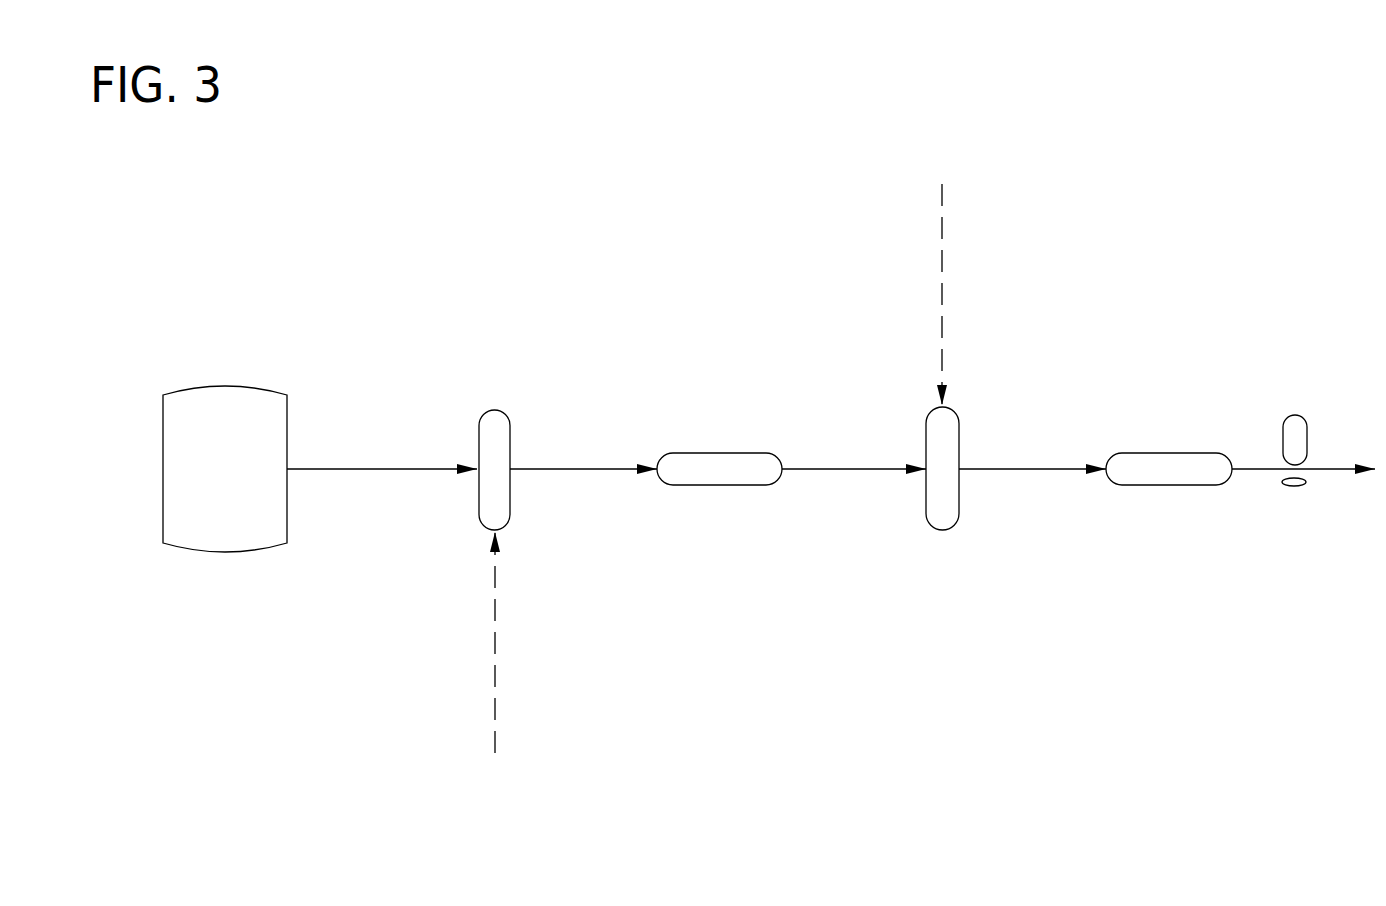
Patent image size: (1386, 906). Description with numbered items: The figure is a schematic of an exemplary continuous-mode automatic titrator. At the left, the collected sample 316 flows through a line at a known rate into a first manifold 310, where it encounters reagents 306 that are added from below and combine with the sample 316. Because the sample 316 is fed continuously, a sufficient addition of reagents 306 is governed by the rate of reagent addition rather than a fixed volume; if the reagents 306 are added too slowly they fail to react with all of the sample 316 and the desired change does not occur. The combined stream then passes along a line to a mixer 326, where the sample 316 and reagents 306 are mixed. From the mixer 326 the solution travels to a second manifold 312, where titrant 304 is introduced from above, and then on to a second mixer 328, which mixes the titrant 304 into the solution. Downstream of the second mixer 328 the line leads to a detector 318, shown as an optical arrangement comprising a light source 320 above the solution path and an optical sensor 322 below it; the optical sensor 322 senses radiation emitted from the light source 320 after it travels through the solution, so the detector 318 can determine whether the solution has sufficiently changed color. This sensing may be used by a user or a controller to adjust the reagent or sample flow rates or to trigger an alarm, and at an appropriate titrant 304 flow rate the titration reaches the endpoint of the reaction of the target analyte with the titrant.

The titrant 304 is at (943, 216).
The reagents 306 is at (495, 723).
The first manifold 310 is at (497, 418).
The second manifold 312 is at (943, 516).
The sample 316 is at (227, 400).
The detector 318 is at (1244, 428).
The light source 320 is at (1292, 420).
The optical sensor 322 is at (1290, 488).
The mixer 326 is at (716, 467).
The second mixer 328 is at (1168, 462).